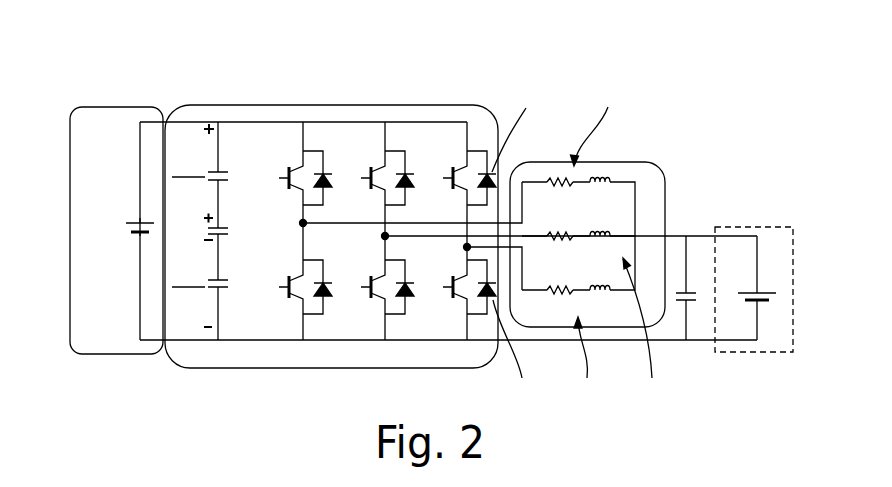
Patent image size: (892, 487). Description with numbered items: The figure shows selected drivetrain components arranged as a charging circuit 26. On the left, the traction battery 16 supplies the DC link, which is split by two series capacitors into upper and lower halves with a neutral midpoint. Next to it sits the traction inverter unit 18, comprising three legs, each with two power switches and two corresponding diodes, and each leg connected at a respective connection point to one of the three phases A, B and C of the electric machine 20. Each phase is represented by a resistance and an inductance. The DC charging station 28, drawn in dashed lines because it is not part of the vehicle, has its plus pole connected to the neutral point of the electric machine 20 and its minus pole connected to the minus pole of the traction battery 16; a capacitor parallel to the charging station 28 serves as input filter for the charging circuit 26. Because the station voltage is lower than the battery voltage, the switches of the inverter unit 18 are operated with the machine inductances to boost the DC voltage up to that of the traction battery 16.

The traction battery 16 is at (104, 107).
The N-phase traction inverter unit 18 is at (453, 105).
The N-phase electric machine 20 is at (638, 160).
The charging circuit 26 is at (682, 232).
The DC charging station 28 is at (757, 227).